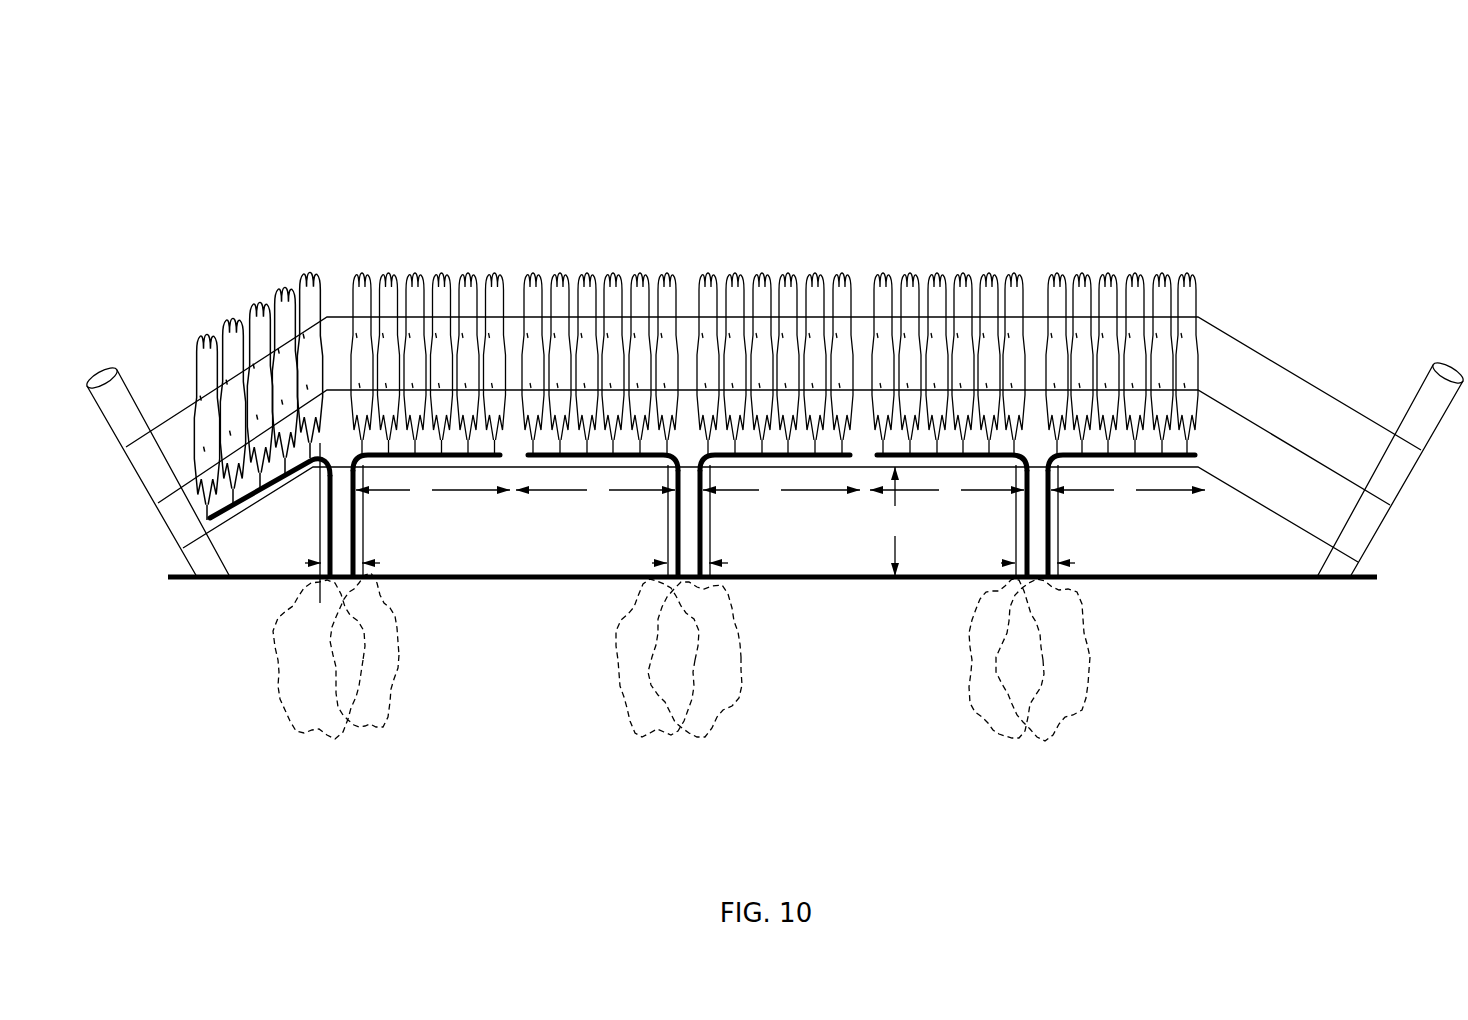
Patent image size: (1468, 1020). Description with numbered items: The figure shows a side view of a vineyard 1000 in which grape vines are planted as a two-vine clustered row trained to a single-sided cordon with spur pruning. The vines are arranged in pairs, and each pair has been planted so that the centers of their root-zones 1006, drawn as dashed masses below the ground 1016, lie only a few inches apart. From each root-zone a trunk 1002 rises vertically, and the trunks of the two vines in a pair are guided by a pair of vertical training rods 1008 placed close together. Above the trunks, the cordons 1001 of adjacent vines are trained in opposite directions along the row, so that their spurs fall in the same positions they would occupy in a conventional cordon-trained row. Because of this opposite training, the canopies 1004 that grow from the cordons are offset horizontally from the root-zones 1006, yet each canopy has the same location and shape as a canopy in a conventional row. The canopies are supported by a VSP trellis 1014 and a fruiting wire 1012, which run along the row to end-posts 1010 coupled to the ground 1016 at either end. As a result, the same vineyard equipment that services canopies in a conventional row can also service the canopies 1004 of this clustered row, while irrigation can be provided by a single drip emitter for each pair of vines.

The vineyard 1000 is at (775, 449).
The cordon 1001 is at (755, 347).
The trunk 1002 is at (321, 516).
The canopy 1004 is at (662, 339).
The root-zone 1006 is at (787, 709).
The vertical training rod 1008 is at (314, 541).
The end-post 1010 is at (1410, 363).
The fruiting wire 1012 is at (1277, 502).
The VSP trellis 1014 is at (752, 447).
The ground 1016 is at (772, 611).